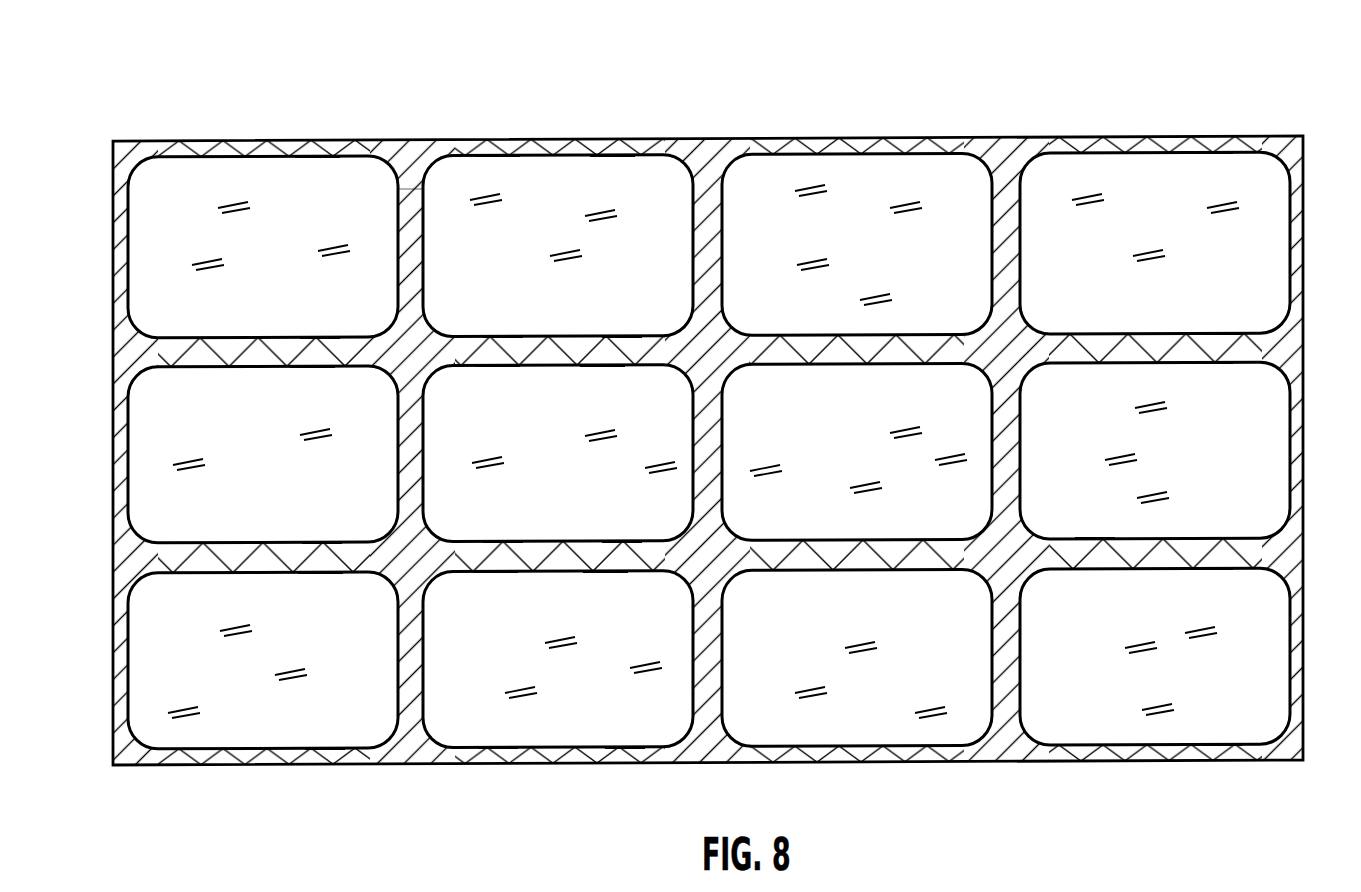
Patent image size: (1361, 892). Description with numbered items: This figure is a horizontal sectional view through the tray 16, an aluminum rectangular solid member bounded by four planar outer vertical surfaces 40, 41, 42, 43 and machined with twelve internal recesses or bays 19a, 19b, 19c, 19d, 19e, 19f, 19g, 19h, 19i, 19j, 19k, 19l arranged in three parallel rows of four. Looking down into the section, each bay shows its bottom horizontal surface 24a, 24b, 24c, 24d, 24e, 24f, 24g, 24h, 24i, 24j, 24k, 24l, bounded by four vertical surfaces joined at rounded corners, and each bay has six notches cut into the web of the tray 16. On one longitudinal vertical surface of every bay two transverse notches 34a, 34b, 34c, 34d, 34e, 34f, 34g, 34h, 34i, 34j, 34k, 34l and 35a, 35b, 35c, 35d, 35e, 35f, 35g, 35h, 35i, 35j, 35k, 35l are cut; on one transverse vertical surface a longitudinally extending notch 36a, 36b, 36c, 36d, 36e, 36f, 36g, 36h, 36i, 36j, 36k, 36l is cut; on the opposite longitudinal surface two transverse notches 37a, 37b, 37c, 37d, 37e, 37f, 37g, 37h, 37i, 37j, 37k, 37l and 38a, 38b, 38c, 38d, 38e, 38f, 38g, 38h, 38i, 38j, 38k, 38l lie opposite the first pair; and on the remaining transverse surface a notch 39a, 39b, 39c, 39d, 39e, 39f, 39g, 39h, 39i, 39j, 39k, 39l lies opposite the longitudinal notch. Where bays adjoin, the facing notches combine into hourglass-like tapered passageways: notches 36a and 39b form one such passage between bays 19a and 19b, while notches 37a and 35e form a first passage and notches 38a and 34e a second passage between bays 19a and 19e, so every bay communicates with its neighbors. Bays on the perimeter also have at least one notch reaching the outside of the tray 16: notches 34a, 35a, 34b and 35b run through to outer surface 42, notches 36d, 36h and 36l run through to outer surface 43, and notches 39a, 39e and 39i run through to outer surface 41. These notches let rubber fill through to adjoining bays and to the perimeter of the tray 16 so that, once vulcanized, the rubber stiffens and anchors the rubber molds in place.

The tray 16 is at (1270, 125).
The bay 19a is at (162, 182).
The bay 19b is at (598, 180).
The bay 19c is at (752, 180).
The bay 19d is at (1070, 178).
The bay 19e is at (160, 512).
The bay 19f is at (563, 517).
The bay 19g is at (843, 520).
The bay 19h is at (1272, 516).
The bay 19i is at (160, 732).
The bay 19j is at (455, 728).
The bay 19k is at (875, 722).
The bay 19l is at (1150, 722).
The bottom horizontal surface 24a is at (257, 273).
The bottom horizontal surface 24b is at (521, 221).
The bottom horizontal surface 24c is at (867, 256).
The bottom horizontal surface 24d is at (1136, 208).
The bottom horizontal surface 24e is at (230, 468).
The bottom horizontal surface 24f is at (578, 473).
The bottom horizontal surface 24g is at (804, 471).
The bottom horizontal surface 24h is at (1186, 473).
The bottom horizontal surface 24i is at (217, 679).
The bottom horizontal surface 24j is at (577, 701).
The bottom horizontal surface 24k is at (887, 686).
The bottom horizontal surface 24l is at (1180, 686).
The notch 34a is at (208, 157).
The notch 34b is at (498, 156).
The notch 34c is at (800, 155).
The notch 34d is at (1100, 153).
The notch 34e is at (202, 360).
The notch 34f is at (497, 359).
The notch 34g is at (802, 358).
The notch 34h is at (1097, 357).
The notch 34i is at (200, 567).
The notch 34j is at (495, 566).
The notch 34k is at (802, 565).
The notch 34l is at (1097, 564).
The notch 35a is at (315, 157).
The notch 35b is at (610, 156).
The notch 35c is at (906, 155).
The notch 35d is at (1210, 153).
The notch 35e is at (313, 360).
The notch 35f is at (606, 359).
The notch 35g is at (910, 358).
The notch 35h is at (1214, 357).
The notch 35i is at (318, 567).
The notch 35j is at (603, 566).
The notch 35k is at (905, 565).
The notch 35l is at (1210, 564).
The notch 36a is at (396, 245).
The notch 36b is at (692, 242).
The notch 36c is at (990, 240).
The notch 36d is at (1288, 238).
The notch 36e is at (396, 450).
The notch 36f is at (690, 459).
The notch 36g is at (990, 454).
The notch 36h is at (1288, 452).
The notch 36i is at (396, 660).
The notch 36j is at (690, 664).
The notch 36k is at (990, 664).
The notch 36l is at (1288, 659).
The notch 37a is at (320, 345).
The notch 37b is at (622, 345).
The notch 37c is at (924, 345).
The notch 37d is at (1224, 343).
The notch 37e is at (322, 552).
The notch 37f is at (622, 551).
The notch 37g is at (922, 550).
The notch 37h is at (1219, 548).
The notch 37i is at (325, 763).
The notch 37j is at (623, 762).
The notch 37k is at (920, 761).
The notch 37l is at (1221, 760).
The notch 38a is at (195, 345).
The notch 38b is at (503, 345).
The notch 38c is at (803, 345).
The notch 38d is at (1098, 343).
The notch 38e is at (200, 552).
The notch 38f is at (503, 551).
The notch 38g is at (803, 550).
The notch 38h is at (1097, 548).
The notch 38i is at (200, 763).
The notch 38j is at (498, 762).
The notch 38k is at (795, 761).
The notch 38l is at (1106, 760).
The notch 39a is at (118, 250).
The notch 39b is at (425, 240).
The notch 39c is at (724, 243).
The notch 39d is at (1022, 248).
The notch 39e is at (118, 446).
The notch 39f is at (425, 445).
The notch 39g is at (724, 444).
The notch 39h is at (1022, 464).
The notch 39i is at (118, 660).
The notch 39j is at (425, 668).
The notch 39k is at (724, 667).
The notch 39l is at (1022, 667).
The outer vertical surface 40 is at (1010, 762).
The outer vertical surface 41 is at (115, 357).
The outer vertical surface 42 is at (410, 150).
The outer vertical surface 43 is at (1305, 345).